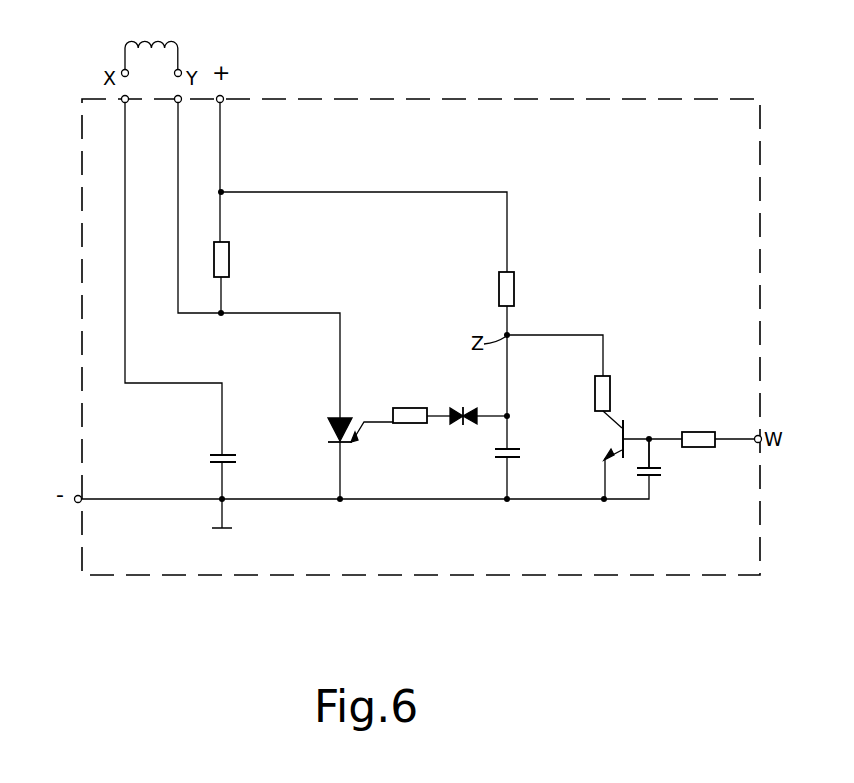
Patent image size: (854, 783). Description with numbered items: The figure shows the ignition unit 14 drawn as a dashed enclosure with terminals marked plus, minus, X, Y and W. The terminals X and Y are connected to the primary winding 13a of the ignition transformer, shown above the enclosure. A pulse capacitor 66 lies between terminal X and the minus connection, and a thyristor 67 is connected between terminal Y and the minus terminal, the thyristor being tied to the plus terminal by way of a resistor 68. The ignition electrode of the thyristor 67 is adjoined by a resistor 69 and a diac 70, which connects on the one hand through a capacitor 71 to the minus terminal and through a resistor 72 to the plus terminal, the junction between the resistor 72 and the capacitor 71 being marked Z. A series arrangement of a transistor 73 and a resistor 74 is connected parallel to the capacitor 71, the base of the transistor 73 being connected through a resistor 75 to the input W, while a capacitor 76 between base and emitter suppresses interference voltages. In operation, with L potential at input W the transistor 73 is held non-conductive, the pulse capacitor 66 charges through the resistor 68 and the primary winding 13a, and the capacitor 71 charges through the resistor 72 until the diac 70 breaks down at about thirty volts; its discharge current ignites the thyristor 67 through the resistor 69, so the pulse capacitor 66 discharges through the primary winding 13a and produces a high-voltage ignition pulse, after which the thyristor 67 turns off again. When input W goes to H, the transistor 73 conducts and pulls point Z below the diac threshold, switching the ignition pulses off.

The primary winding 13a is at (151, 43).
The ignition unit 14 is at (546, 80).
The pulse capacitor 66 is at (208, 458).
The thyristor 67 is at (330, 436).
The resistor 68 is at (229, 259).
The resistor 69 is at (410, 408).
The diac 70 is at (465, 408).
The capacitor 71 is at (512, 459).
The resistor 72 is at (514, 292).
The transistor 73 is at (619, 436).
The resistor 74 is at (610, 394).
The resistor 75 is at (700, 432).
The capacitor 76 is at (655, 477).